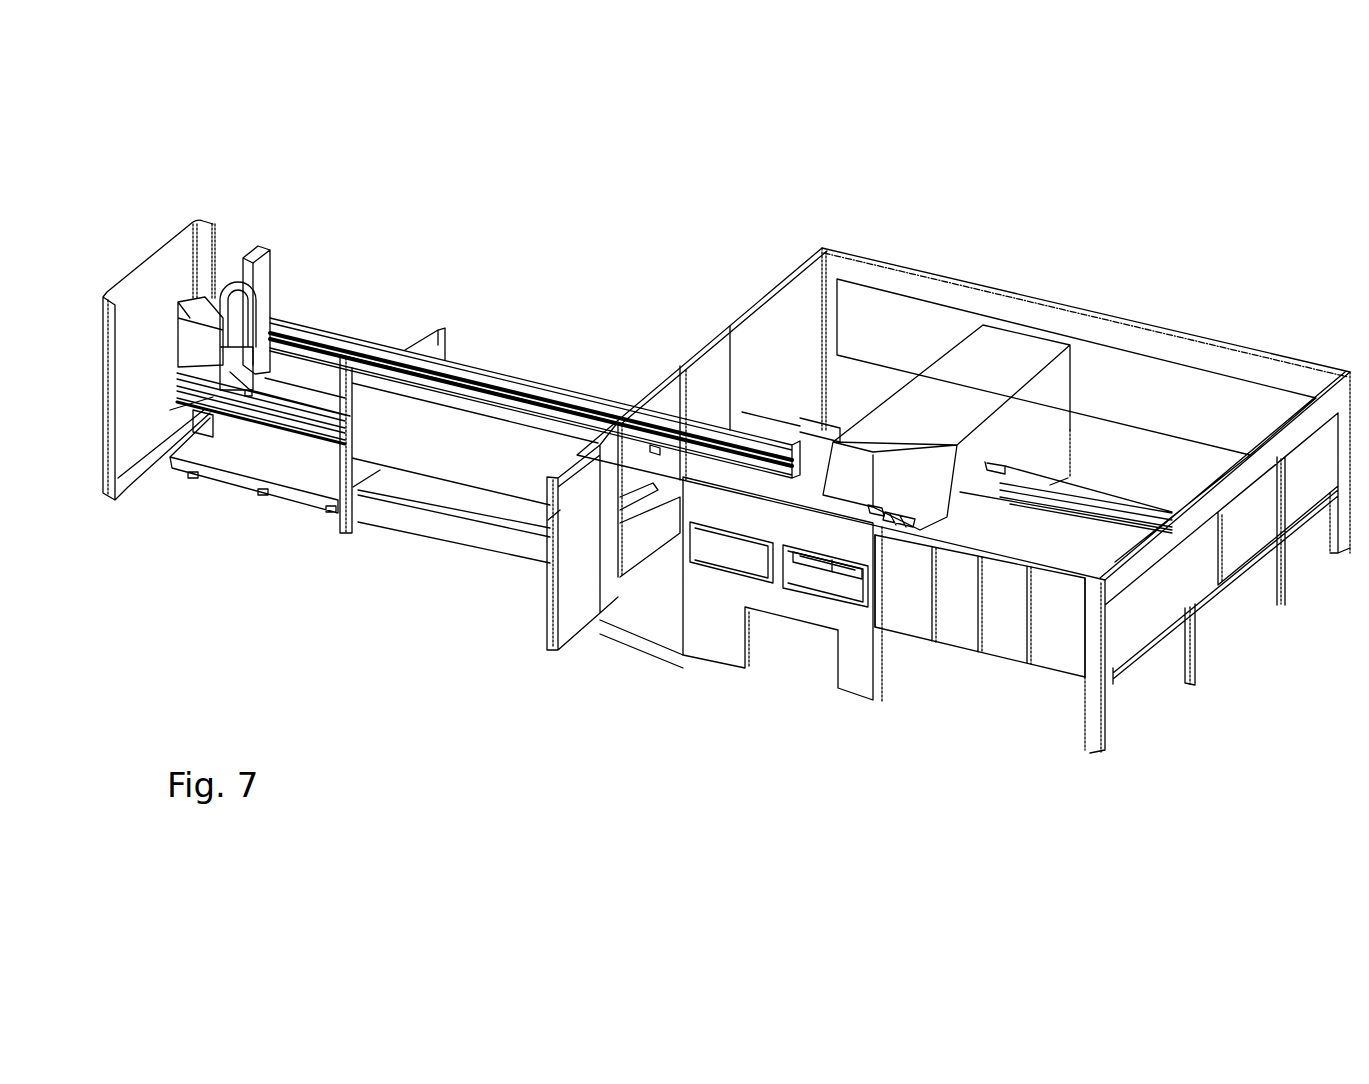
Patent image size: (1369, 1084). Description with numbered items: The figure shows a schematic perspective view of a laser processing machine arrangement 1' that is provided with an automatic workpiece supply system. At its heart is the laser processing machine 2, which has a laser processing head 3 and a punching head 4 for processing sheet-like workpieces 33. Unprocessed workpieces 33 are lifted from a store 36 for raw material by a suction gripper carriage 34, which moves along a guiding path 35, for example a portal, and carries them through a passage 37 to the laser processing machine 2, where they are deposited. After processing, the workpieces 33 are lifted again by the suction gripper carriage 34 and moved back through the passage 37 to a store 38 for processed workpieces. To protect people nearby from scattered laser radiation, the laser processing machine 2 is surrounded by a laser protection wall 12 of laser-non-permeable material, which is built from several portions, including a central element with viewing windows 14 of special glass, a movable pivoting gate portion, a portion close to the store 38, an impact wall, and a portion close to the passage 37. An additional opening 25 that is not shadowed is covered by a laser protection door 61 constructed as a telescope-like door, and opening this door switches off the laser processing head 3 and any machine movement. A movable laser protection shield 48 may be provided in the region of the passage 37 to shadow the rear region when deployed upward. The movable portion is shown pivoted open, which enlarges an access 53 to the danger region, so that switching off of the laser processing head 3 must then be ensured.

The laser processing machine arrangement 1' is at (963, 397).
The laser processing machine 2 is at (1007, 357).
The laser processing head 3 is at (873, 508).
The punching head 4 is at (905, 520).
The laser protection wall 12 is at (1190, 590).
The viewing windows 14 is at (830, 583).
The additional opening 25 is at (942, 699).
The workpieces 33 is at (1050, 533).
The suction gripper carriage 34 is at (288, 396).
The guiding path 35 is at (483, 377).
The store for unprocessed workpieces 36 is at (245, 458).
The passage 37 is at (646, 470).
The store for processed workpieces 38 is at (490, 507).
The movable laser protection shield 48 is at (646, 537).
The access 53 is at (623, 660).
The laser protection door 61 is at (1050, 645).